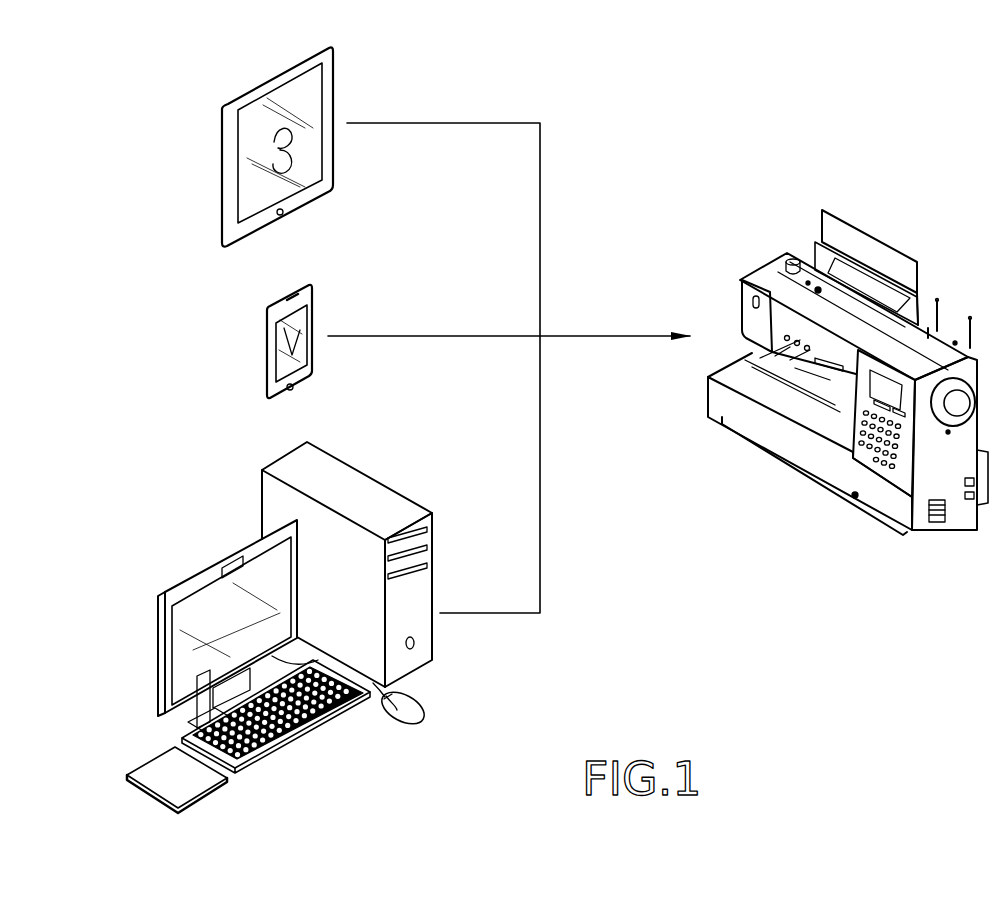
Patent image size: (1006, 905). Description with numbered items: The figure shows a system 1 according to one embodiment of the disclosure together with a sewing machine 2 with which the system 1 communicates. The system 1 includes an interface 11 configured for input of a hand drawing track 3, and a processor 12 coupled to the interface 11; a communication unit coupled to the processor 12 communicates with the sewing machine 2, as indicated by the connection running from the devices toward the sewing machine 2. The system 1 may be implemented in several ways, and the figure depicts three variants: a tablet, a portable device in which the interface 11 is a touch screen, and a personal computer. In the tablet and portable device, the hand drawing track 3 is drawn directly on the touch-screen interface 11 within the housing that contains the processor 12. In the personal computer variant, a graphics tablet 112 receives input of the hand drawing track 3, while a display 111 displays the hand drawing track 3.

The system 1 is at (234, 428).
The sewing machine 2 is at (774, 468).
The hand drawing track 3 is at (265, 147).
The interface 11 is at (179, 440).
The processor 12 is at (248, 73).
The display 111 is at (177, 640).
The graphics tablet 112 is at (162, 787).